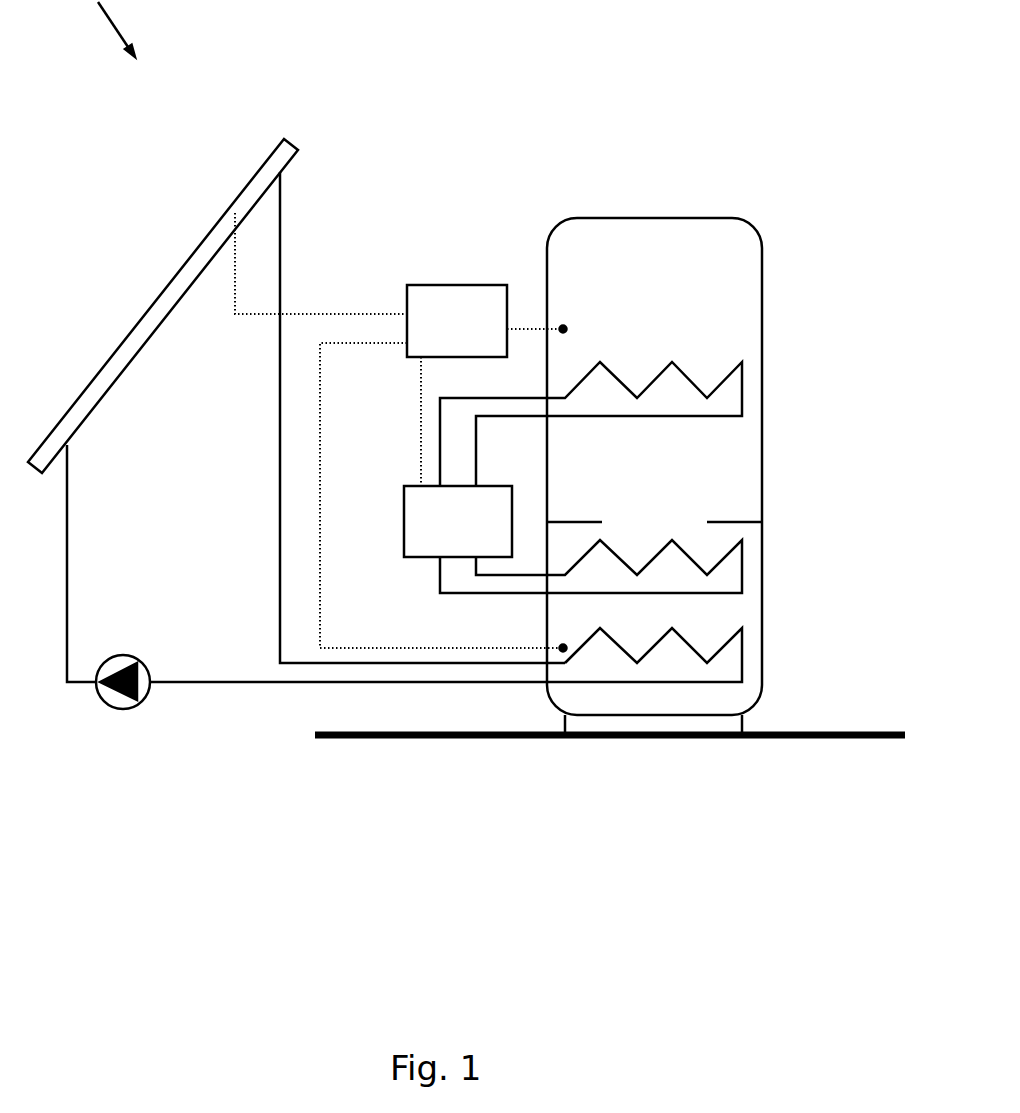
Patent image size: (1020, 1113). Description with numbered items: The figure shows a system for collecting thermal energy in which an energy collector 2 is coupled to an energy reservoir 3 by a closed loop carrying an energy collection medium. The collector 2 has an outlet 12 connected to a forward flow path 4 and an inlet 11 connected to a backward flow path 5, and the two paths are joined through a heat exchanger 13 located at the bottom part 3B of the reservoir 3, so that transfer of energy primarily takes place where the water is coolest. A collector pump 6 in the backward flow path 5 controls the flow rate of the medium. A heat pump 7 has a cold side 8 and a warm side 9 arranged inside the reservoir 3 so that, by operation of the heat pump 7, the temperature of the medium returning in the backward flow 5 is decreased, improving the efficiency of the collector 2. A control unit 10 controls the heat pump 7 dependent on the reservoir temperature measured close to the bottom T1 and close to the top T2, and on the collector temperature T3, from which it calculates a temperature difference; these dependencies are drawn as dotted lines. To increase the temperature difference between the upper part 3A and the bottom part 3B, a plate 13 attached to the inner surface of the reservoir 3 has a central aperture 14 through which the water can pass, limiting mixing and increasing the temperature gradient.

The energy collector 2 is at (148, 320).
The energy reservoir 3 is at (730, 307).
The upper part of the energy reservoir 3A is at (683, 238).
The bottom part of the energy reservoir 3B is at (673, 695).
The forward flow path 4 is at (280, 430).
The backward flow path 5 is at (67, 603).
The collector pump 6 is at (115, 697).
The heat pump 7 is at (427, 518).
The cold side 8 is at (742, 567).
The warm side 9 is at (742, 392).
The control unit 10 is at (430, 303).
The inlet 11 is at (67, 445).
The outlet 12 is at (282, 173).
The heat exchanger 13 is at (730, 520).
The aperture 14 is at (657, 520).
The reservoir temperature close to the bottom T1 is at (563, 648).
The reservoir temperature close to the top T2 is at (563, 329).
The collector temperature T3 is at (235, 213).